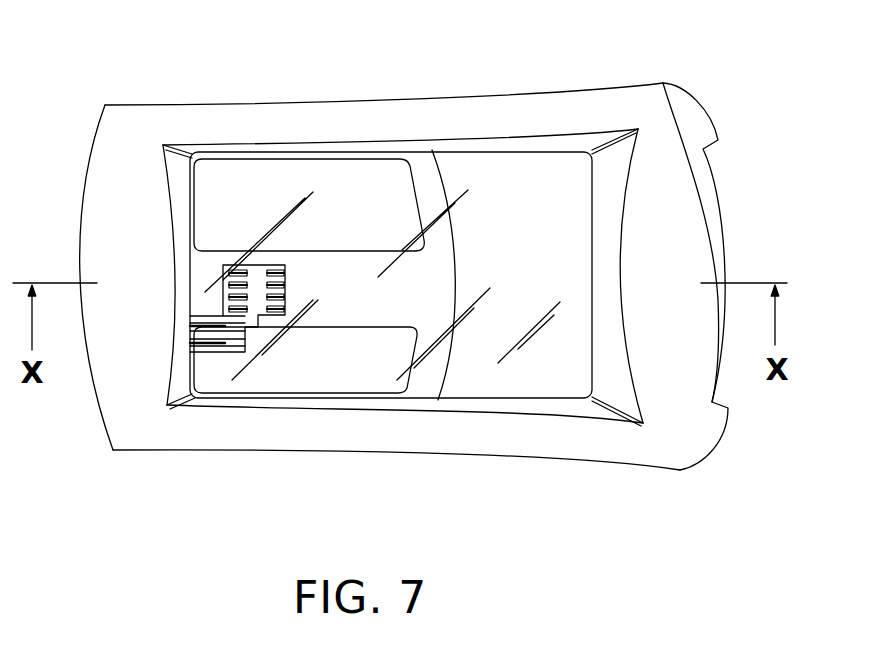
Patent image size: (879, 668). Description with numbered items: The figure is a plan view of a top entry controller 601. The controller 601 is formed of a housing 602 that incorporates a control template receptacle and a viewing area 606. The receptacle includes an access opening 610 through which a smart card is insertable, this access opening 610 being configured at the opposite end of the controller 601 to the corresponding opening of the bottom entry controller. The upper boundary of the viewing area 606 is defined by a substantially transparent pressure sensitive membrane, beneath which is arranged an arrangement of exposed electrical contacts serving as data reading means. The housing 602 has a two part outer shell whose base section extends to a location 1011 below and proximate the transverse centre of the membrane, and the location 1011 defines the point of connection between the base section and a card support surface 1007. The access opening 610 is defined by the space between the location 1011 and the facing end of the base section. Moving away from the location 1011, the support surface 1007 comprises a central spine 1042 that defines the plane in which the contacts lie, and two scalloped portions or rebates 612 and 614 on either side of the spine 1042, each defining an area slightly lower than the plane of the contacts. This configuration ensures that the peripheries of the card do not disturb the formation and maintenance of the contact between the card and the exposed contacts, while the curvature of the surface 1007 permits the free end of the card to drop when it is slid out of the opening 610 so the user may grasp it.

The top entry controller 601 is at (92, 85).
The access opening 610 is at (730, 217).
The viewing area 606 is at (546, 262).
The scalloped portion or rebate 612 is at (366, 188).
The scalloped portion or rebate 614 is at (343, 372).
The housing 602 is at (267, 318).
The location 1011 is at (445, 187).
The card support surface 1007 is at (430, 323).
The central spine 1042 is at (332, 308).